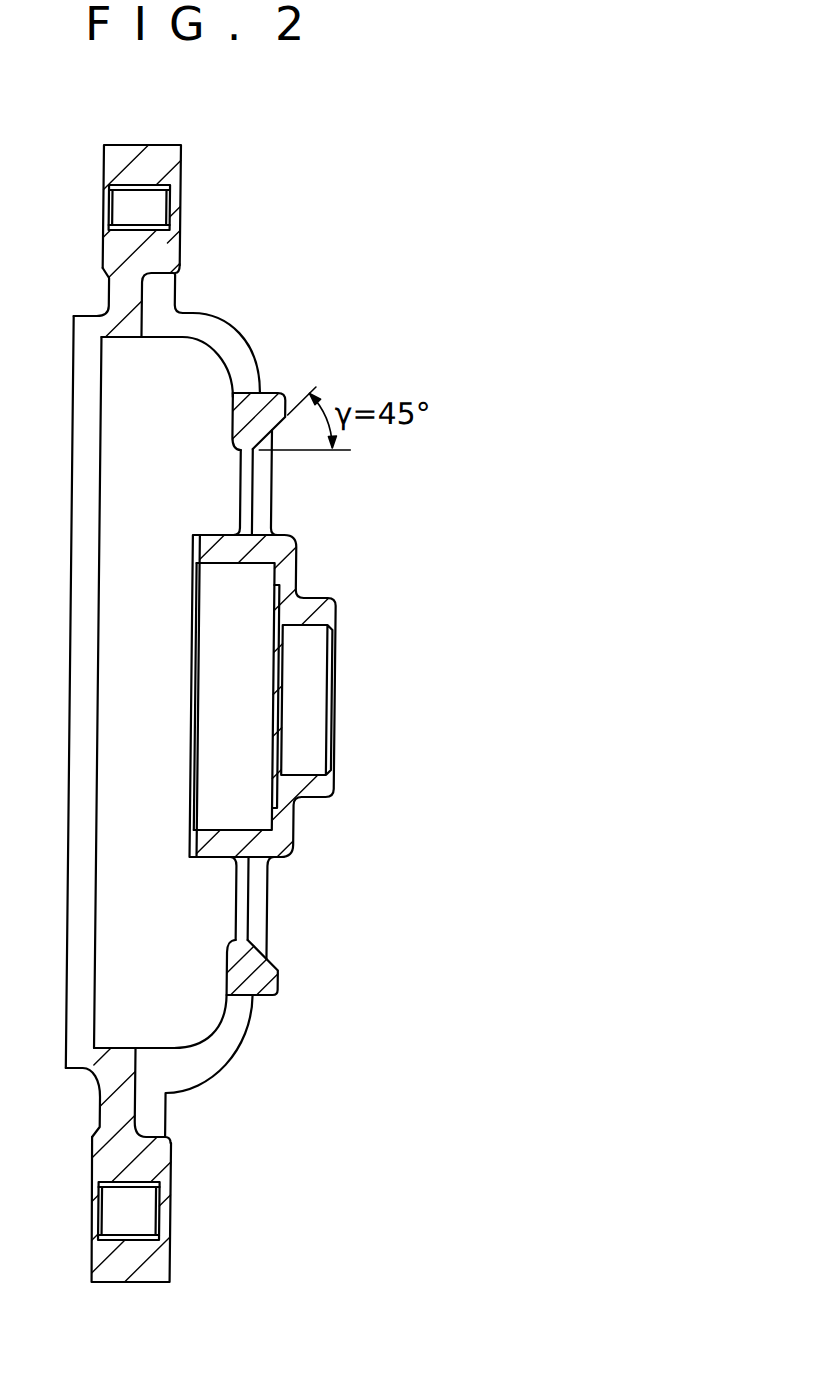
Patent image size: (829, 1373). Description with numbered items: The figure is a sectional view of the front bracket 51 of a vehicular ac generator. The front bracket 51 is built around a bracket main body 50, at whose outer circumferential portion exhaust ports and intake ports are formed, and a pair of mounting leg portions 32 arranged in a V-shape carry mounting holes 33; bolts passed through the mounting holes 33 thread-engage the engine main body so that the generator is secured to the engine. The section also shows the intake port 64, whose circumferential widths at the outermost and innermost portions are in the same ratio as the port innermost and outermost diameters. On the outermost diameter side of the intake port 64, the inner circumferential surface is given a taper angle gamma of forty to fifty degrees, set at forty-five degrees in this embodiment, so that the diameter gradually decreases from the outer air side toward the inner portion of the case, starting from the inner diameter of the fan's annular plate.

The mounting leg portion 32 is at (184, 256).
The mounting hole 33 is at (155, 199).
The bracket main body 50 is at (291, 396).
The front bracket 51 is at (366, 287).
The intake port 64 is at (263, 498).